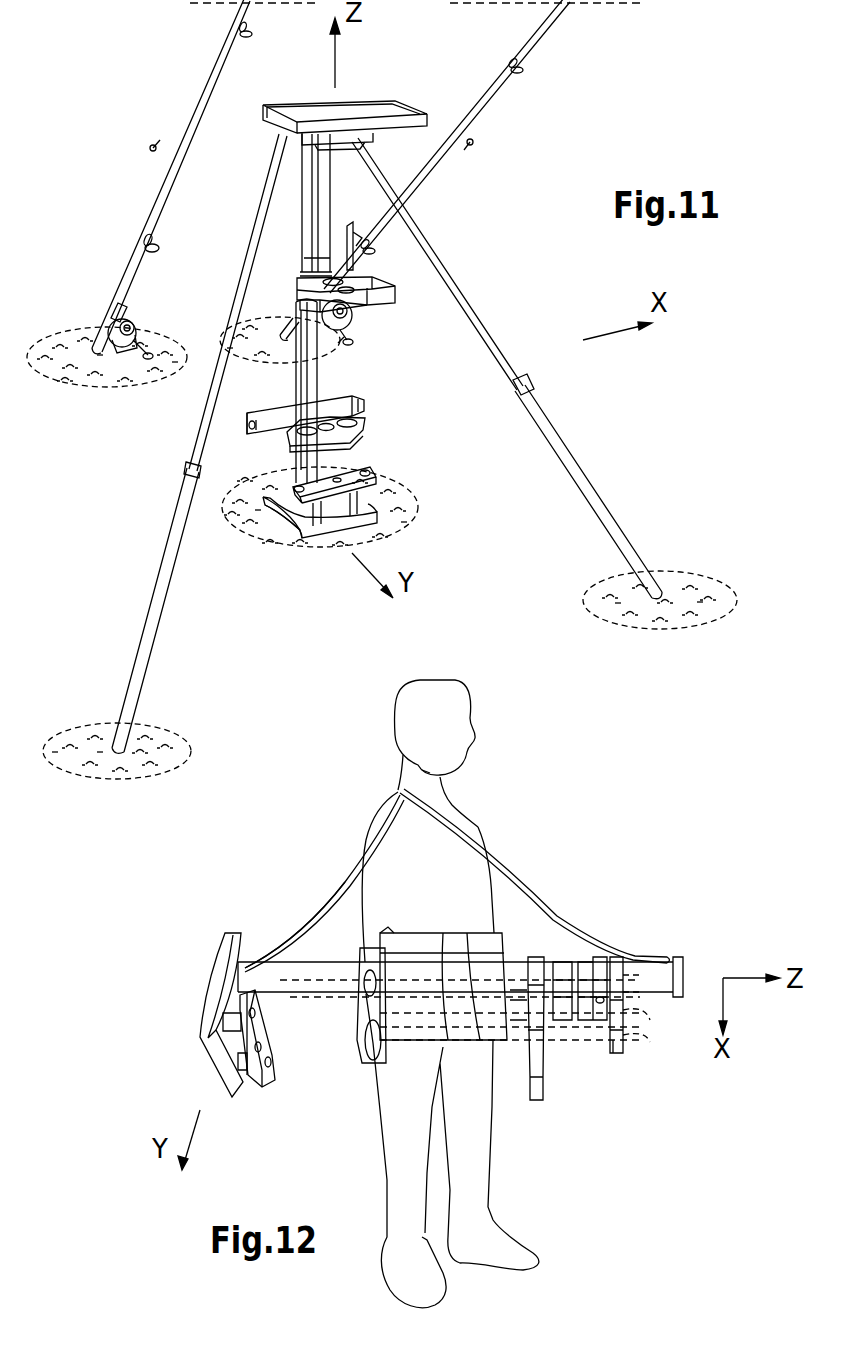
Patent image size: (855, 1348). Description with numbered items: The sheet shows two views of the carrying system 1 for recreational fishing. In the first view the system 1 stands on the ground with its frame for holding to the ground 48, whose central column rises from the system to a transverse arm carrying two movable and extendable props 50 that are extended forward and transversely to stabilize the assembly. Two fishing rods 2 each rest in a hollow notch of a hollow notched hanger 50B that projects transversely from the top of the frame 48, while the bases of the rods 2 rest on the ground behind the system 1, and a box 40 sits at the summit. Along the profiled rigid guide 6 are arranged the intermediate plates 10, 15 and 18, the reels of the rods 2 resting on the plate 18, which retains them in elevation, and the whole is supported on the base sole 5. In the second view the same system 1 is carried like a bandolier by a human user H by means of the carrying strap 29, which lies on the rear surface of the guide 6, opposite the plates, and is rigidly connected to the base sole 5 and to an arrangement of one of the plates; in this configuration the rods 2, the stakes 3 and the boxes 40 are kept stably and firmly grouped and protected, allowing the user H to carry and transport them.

In FIG. 11, the fishing rod 2 is at (212, 77).
In FIG. 12, the fishing rod 2 is at (620, 1053).
In FIG. 11, the hollow notched hanger 50B is at (153, 148).
In FIG. 11, the container or box 40 is at (358, 106).
In FIG. 11, the frame for holding to the ground 48 is at (284, 245).
In FIG. 11, the intermediate plate 18 is at (378, 285).
In FIG. 12, the intermediate plate 18 is at (540, 1087).
In FIG. 11, the prop 50 is at (170, 532).
In FIG. 11, the intermediate plate 15 is at (368, 412).
In FIG. 11, the intermediate plate 10 is at (370, 466).
In FIG. 12, the intermediate plate 10 is at (272, 1078).
In FIG. 12, the carrying system 1 is at (285, 888).
In FIG. 12, the base sole 5 is at (218, 980).
In FIG. 12, the human user H is at (384, 750).
In FIG. 12, the carrying strap 29 is at (525, 888).
In FIG. 12, the stake 3 is at (440, 940).
In FIG. 12, the profiled rigid guide 6 is at (308, 972).